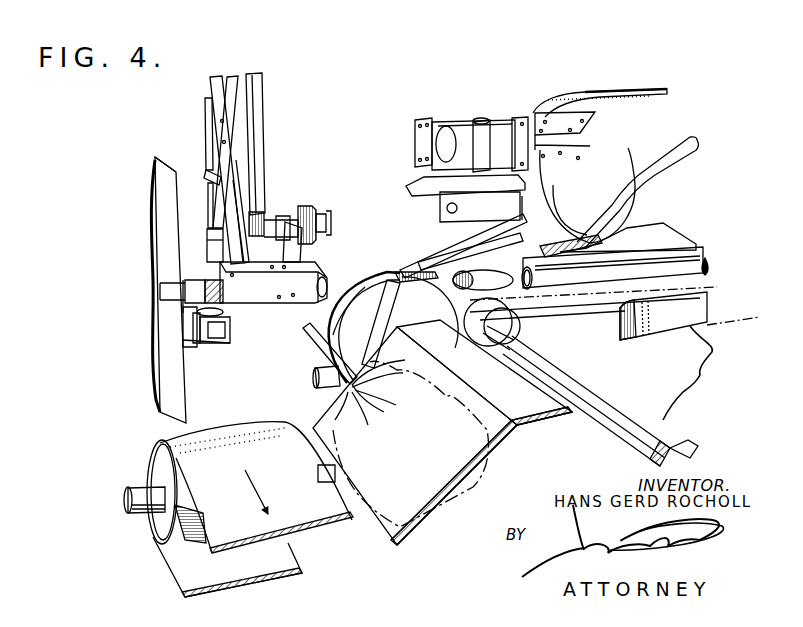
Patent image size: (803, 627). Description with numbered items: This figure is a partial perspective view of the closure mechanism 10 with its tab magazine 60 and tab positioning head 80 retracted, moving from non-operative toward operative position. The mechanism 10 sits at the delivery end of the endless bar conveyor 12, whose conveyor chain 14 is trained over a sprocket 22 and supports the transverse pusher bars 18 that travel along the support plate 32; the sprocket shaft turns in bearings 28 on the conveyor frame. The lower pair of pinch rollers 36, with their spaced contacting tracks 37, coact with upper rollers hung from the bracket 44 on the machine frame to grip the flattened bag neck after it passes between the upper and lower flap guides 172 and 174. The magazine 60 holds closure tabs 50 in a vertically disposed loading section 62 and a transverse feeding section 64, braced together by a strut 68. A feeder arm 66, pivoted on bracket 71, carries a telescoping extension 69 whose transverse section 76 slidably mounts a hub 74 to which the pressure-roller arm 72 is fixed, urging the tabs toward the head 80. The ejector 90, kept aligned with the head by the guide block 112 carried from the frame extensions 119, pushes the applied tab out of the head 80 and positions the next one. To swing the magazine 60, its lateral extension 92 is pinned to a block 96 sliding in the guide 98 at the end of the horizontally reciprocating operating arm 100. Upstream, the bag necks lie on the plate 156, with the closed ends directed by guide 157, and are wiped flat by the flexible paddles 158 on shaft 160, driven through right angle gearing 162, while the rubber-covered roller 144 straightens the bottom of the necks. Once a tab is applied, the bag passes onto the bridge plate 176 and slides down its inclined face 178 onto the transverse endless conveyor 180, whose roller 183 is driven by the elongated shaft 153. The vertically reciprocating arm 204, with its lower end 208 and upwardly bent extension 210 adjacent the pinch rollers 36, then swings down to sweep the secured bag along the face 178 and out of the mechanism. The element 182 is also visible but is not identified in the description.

The closure mechanism 10 is at (135, 152).
The longitudinal endless bar conveyor 12 is at (628, 441).
The conveyor chain 14 is at (718, 276).
The pusher bars 18 is at (676, 438).
The sprocket 22 is at (512, 317).
The bearings 28 is at (452, 423).
The support plate 32 is at (700, 364).
The lower pair of pinch rollers 36 is at (368, 306).
The contacting tracks 37 is at (370, 296).
The bracket 44 is at (494, 209).
The closure tab 50 is at (327, 294).
The magazine 60 is at (231, 155).
The loading section 62 is at (210, 147).
The feeding section 64 is at (220, 238).
The feeder arm 66 is at (262, 85).
The strut 68 is at (212, 88).
The telescoping extension 69 is at (258, 225).
The bracket 71 is at (232, 75).
The arm 72 is at (297, 257).
The hub 74 is at (312, 208).
The transverse section 76 is at (323, 214).
The tab positioning head 80 is at (282, 326).
The ejector 90 is at (222, 282).
The lateral extension 92 is at (222, 315).
The block 96 is at (222, 333).
The guide 98 is at (205, 342).
The operating arm 100 is at (192, 347).
The guide block 112 is at (185, 296).
The extensions 119 is at (165, 214).
The roller 144 is at (594, 244).
The elongated shaft 153 is at (127, 504).
The plate 156 is at (663, 236).
The guide 157 is at (705, 305).
The paddles 158 is at (600, 114).
The shaft 160 is at (572, 137).
The right angle gearing 162 is at (496, 118).
The upper flap guide 172 is at (418, 262).
The lower flap guide 174 is at (455, 255).
The bridge plate 176 is at (540, 429).
The inclined face 178 is at (454, 436).
The transverse endless conveyor 180 is at (214, 503).
The tube 182 is at (654, 189).
The roller 183 is at (155, 468).
The vertically reciprocating arm 204 is at (312, 352).
The lower end 208 is at (369, 330).
The upwardly bent extension 210 is at (396, 311).